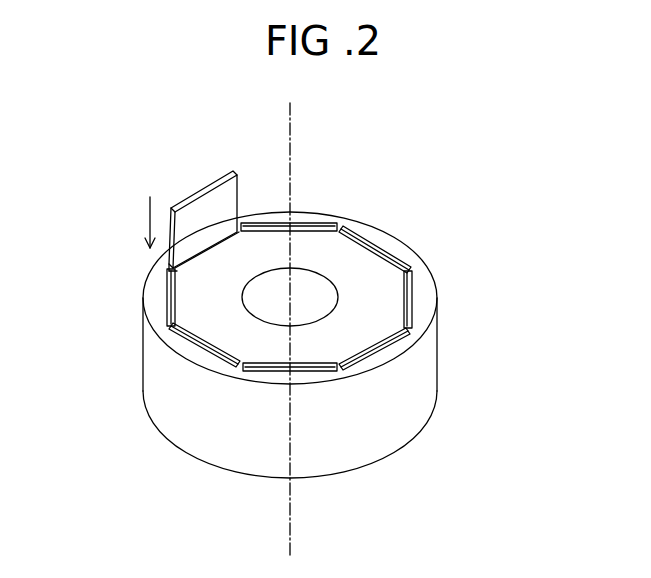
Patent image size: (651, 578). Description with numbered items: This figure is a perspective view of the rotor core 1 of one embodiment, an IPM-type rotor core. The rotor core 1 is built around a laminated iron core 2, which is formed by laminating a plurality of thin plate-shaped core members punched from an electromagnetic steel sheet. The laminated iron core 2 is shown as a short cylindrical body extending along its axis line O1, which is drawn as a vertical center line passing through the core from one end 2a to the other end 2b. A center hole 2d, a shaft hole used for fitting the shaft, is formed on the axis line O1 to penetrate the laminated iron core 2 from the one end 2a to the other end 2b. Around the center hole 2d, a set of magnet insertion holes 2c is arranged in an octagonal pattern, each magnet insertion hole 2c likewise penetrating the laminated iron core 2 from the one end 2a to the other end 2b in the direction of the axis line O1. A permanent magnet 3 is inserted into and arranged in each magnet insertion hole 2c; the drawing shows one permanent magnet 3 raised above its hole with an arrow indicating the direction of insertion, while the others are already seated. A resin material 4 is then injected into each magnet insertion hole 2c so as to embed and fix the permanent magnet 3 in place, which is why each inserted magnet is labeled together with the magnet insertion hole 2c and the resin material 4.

The rotor core 1 is at (488, 182).
The laminated iron core 2 is at (436, 346).
The one end 2a is at (390, 453).
The other end 2b is at (360, 228).
The magnet insertion hole 2c is at (207, 250).
The center hole 2d is at (272, 292).
The permanent magnet 3 is at (204, 189).
The resin material 4 is at (310, 328).
The axis line O1 is at (290, 315).